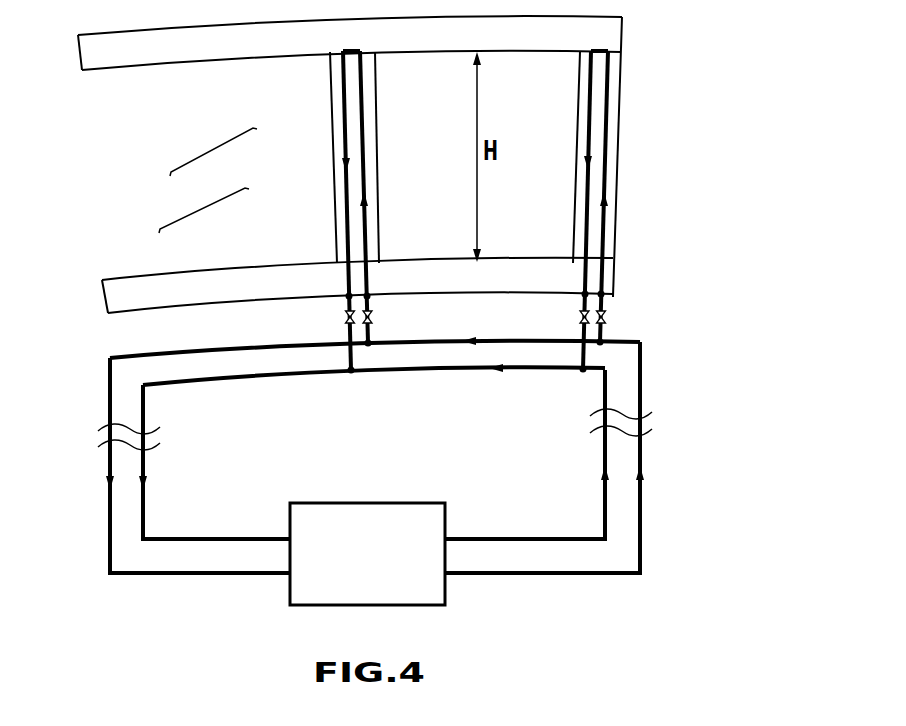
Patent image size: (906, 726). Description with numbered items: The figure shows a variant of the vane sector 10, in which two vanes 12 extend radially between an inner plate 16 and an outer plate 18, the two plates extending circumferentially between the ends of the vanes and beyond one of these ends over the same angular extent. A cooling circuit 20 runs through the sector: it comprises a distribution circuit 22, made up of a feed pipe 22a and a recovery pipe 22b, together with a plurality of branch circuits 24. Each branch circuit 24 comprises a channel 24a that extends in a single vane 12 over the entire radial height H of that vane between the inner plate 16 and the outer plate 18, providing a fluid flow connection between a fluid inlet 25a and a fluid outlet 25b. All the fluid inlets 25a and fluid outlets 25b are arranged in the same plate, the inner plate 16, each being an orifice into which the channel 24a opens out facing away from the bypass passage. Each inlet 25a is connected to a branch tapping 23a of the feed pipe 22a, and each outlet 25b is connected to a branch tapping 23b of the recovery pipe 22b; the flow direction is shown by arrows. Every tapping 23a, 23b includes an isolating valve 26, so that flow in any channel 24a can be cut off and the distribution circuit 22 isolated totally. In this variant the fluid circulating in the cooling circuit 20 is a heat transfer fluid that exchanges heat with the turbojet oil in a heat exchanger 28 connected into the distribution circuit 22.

The vane sector 10 is at (690, 57).
The vane 12 is at (331, 110).
The inner plate 16 is at (102, 291).
The outer plate 18 is at (78, 47).
The cooling circuit 20 is at (210, 148).
The distribution circuit 22 is at (203, 205).
The feed pipe 22a is at (242, 347).
The recovery pipe 22b is at (188, 377).
The branch tapping of the feed pipe 23a is at (370, 345).
The branch tapping of the recovery pipe 23b is at (351, 372).
The branch circuit 24 is at (459, 210).
The channel 24a is at (362, 102).
The fluid inlet 25a is at (368, 296).
The fluid outlet 25b is at (349, 298).
The isolating valve 26 is at (356, 318).
The heat exchanger 28 is at (386, 568).